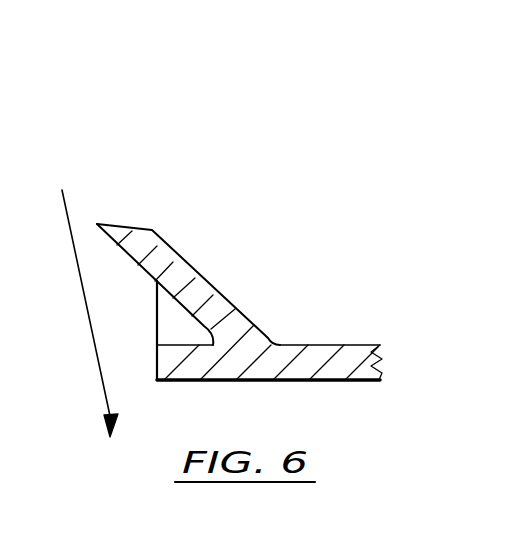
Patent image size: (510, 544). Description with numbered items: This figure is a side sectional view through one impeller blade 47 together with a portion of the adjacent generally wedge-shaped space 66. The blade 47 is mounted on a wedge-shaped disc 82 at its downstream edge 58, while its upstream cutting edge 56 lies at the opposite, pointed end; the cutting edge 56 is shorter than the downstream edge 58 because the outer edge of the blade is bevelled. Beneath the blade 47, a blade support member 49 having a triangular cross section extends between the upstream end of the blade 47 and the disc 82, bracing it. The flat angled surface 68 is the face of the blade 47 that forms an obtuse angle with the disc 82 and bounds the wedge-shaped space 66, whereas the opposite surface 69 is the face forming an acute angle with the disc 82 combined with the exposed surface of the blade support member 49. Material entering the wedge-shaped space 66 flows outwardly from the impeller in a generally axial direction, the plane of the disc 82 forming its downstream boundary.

The radially extending blade 47 is at (178, 268).
The blade support member 49 is at (180, 332).
The upstream cutting edge 56 is at (123, 226).
The downstream edge 58 is at (263, 337).
The generally wedge-shaped space 66 is at (135, 309).
The flat angled surface 68 is at (212, 282).
The opposite surface 69 is at (107, 242).
The wedge-shaped disc 82 is at (319, 382).